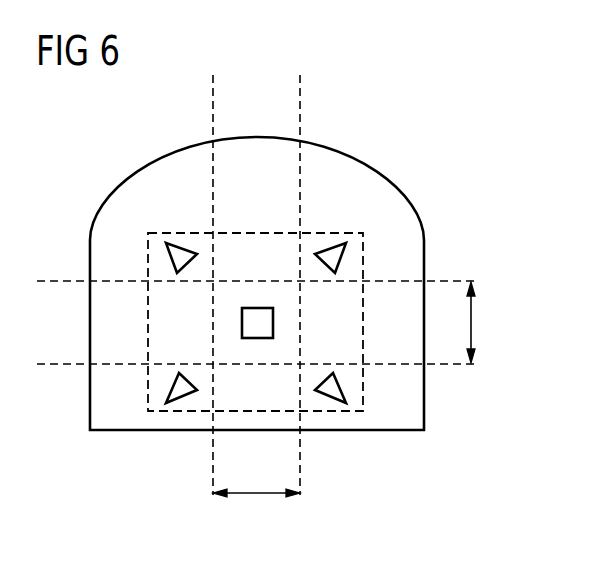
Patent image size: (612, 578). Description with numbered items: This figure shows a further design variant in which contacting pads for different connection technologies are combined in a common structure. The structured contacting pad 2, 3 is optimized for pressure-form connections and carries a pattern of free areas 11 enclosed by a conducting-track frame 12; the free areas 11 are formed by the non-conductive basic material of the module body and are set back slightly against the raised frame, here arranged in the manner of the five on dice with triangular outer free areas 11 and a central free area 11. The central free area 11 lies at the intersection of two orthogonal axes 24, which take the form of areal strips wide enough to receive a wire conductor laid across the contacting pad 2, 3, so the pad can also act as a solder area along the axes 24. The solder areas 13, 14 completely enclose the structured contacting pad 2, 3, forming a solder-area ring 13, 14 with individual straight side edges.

The contacting pad 2 is at (170, 423).
The contacting pad 3 is at (172, 412).
The free area 11 is at (244, 335).
The conducting-track frame 12 is at (258, 240).
The solder area 13 is at (306, 283).
The solder area 14 is at (412, 255).
The axis 24 is at (472, 320).